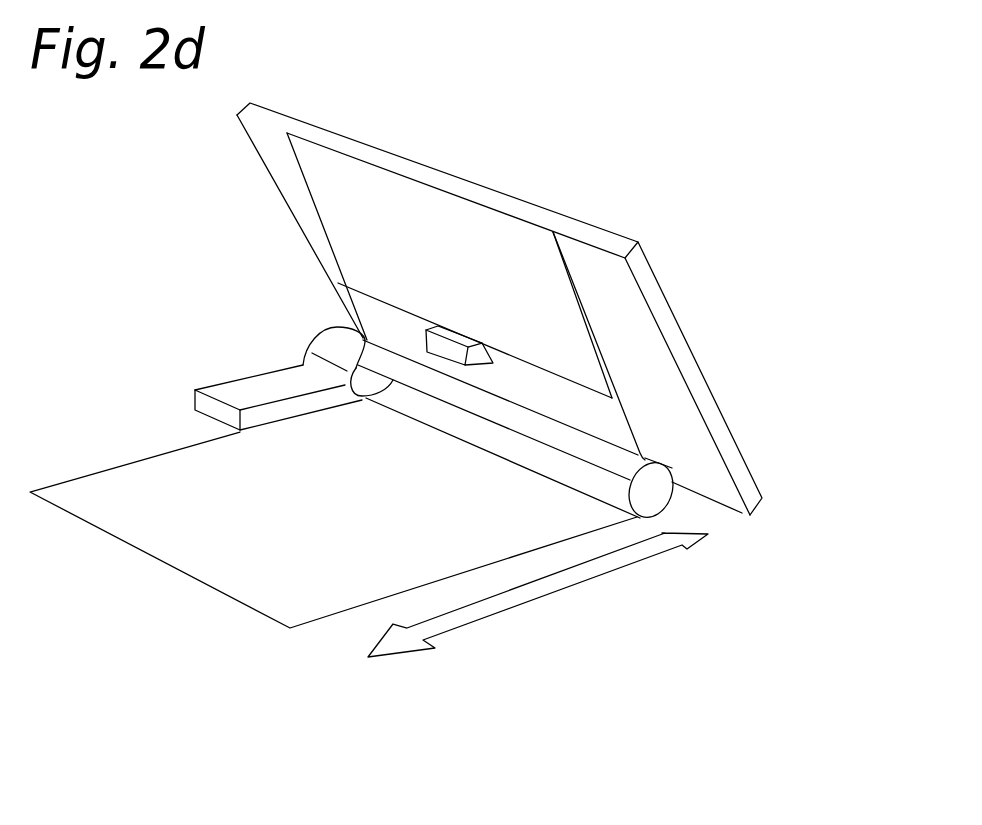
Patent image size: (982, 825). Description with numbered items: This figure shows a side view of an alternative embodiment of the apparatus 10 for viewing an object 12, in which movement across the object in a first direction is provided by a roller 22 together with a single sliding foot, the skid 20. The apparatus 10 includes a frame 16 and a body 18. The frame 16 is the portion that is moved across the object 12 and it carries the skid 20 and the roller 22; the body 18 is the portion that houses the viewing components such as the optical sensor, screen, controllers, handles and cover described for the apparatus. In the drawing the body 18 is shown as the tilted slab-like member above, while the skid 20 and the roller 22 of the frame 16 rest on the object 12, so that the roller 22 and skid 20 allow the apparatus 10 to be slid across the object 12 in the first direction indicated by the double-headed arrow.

The apparatus 10 is at (695, 253).
The object 12 is at (310, 590).
The frame 16 is at (320, 303).
The body 18 is at (588, 213).
The skid 20 is at (262, 365).
The roller 22 is at (652, 488).